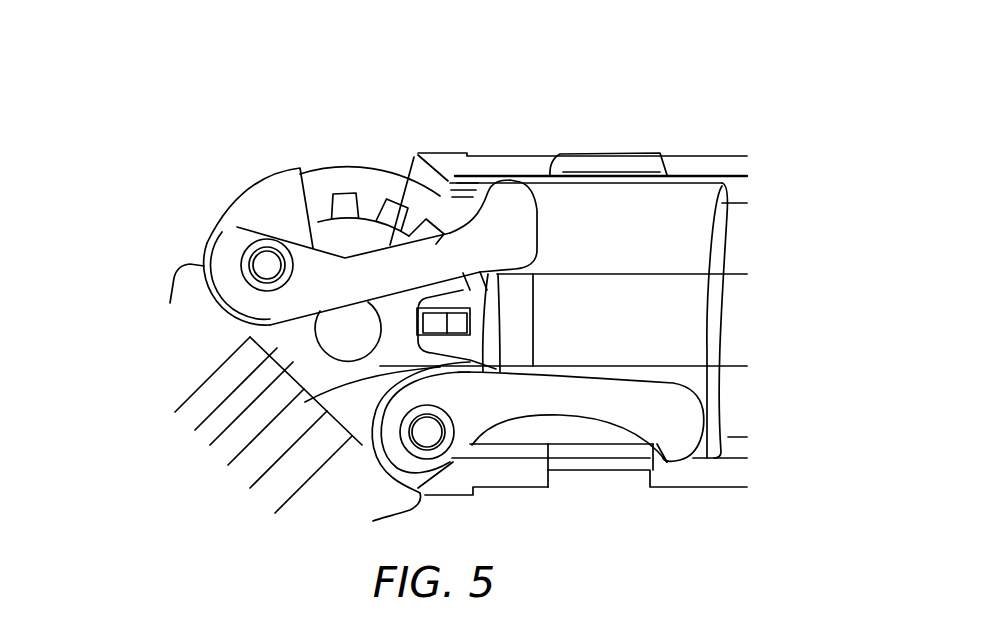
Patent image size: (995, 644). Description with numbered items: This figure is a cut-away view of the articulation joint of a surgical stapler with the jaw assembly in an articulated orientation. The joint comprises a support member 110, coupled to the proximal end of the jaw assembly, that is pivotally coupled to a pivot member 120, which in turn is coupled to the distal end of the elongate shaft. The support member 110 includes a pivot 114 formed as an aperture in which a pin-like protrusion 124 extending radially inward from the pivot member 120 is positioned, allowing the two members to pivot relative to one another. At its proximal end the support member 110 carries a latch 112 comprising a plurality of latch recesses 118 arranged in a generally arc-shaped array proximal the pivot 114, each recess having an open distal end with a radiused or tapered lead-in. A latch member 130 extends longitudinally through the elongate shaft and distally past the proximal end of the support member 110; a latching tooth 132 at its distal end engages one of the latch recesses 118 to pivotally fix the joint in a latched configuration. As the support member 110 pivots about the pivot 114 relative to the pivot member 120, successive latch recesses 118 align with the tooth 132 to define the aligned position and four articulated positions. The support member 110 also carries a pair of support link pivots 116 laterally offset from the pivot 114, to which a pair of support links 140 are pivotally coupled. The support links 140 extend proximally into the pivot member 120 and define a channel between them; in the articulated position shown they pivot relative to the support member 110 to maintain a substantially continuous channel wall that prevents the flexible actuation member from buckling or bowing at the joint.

The support member 110 is at (170, 303).
The latch 112 is at (330, 177).
The pivot 114 is at (455, 362).
The support link pivots 116 is at (247, 253).
The latch recesses 118 is at (428, 230).
The pivot member 120 is at (595, 168).
The pin-like protrusion 124 is at (332, 330).
The latch member 130 is at (672, 325).
The latching tooth 132 is at (455, 325).
The support links 140 is at (460, 247).